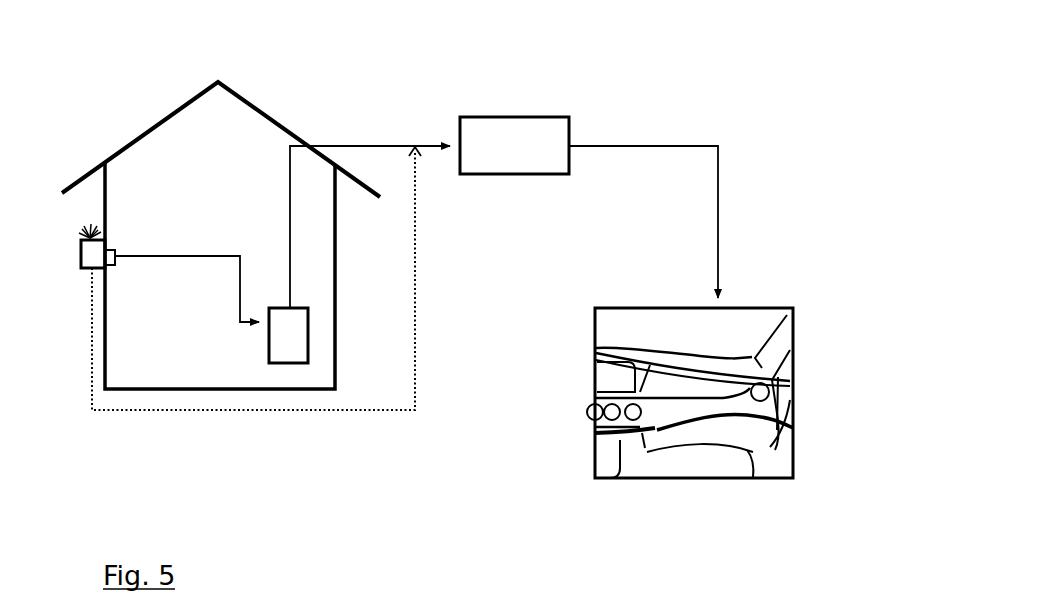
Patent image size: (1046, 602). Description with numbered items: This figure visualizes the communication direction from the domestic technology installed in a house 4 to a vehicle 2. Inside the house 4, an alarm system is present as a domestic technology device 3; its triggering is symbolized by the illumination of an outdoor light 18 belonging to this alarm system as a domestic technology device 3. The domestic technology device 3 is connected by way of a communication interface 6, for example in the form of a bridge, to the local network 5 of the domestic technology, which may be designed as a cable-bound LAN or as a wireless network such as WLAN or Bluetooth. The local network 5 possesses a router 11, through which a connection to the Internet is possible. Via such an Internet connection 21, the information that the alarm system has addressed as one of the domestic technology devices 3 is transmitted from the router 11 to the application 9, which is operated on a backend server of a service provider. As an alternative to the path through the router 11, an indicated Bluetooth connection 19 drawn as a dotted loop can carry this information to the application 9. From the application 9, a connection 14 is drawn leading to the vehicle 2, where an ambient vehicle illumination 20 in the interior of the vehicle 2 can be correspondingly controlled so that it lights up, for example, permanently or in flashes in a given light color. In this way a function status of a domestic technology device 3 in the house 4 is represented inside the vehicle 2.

The vehicle 2 is at (749, 316).
The domestic technology device 3 is at (86, 258).
The house 4 is at (157, 117).
The local network 5 is at (183, 255).
The communication interface 6 is at (103, 272).
The application 9 is at (508, 135).
The router 11 is at (292, 348).
The communication link 14 is at (689, 145).
The outdoor light 18 is at (87, 233).
The Bluetooth connection 19 is at (360, 411).
The ambient vehicle illumination 20 is at (760, 420).
The Internet connection 21 is at (363, 143).